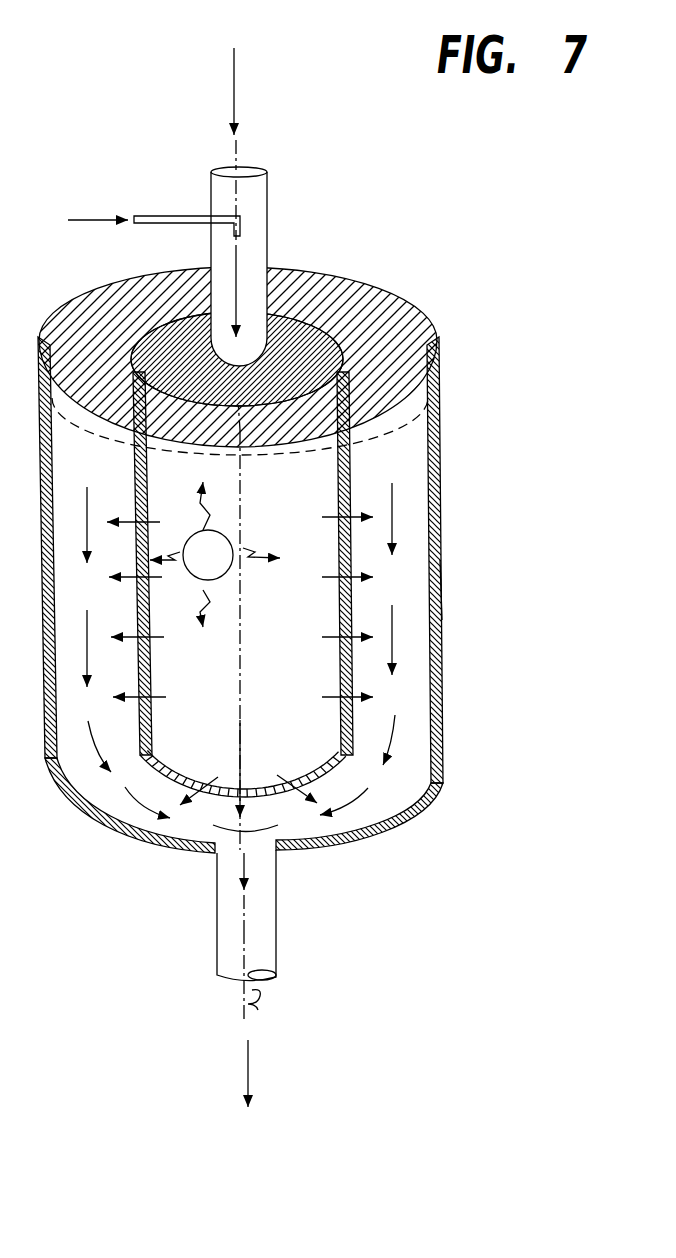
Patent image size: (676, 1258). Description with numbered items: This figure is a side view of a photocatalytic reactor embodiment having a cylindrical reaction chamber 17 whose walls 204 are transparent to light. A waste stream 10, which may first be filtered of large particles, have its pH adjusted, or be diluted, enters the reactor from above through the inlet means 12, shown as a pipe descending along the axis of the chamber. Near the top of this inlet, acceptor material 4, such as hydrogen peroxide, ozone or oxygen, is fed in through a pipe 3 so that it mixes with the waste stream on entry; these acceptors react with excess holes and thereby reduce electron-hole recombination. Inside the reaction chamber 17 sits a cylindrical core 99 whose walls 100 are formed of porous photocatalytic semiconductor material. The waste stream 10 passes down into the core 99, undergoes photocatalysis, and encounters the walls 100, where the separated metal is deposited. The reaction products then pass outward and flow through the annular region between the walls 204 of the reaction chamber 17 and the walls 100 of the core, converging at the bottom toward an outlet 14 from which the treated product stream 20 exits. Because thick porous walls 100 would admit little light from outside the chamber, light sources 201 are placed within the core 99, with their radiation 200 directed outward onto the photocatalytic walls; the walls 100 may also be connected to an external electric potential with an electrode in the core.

The waste stream 10 is at (235, 83).
The inlet means 12 is at (268, 193).
The pipe 3 is at (172, 213).
The acceptor material 4 is at (80, 213).
The reaction chamber 17 is at (393, 287).
The walls of the core 100 is at (302, 332).
The core 99 is at (241, 657).
The radiation arrows 200 is at (243, 548).
The light sources 201 is at (208, 555).
The walls of the reaction chamber 204 is at (436, 590).
The outlet tube 14 is at (277, 897).
The product gas stream 20 is at (249, 1058).